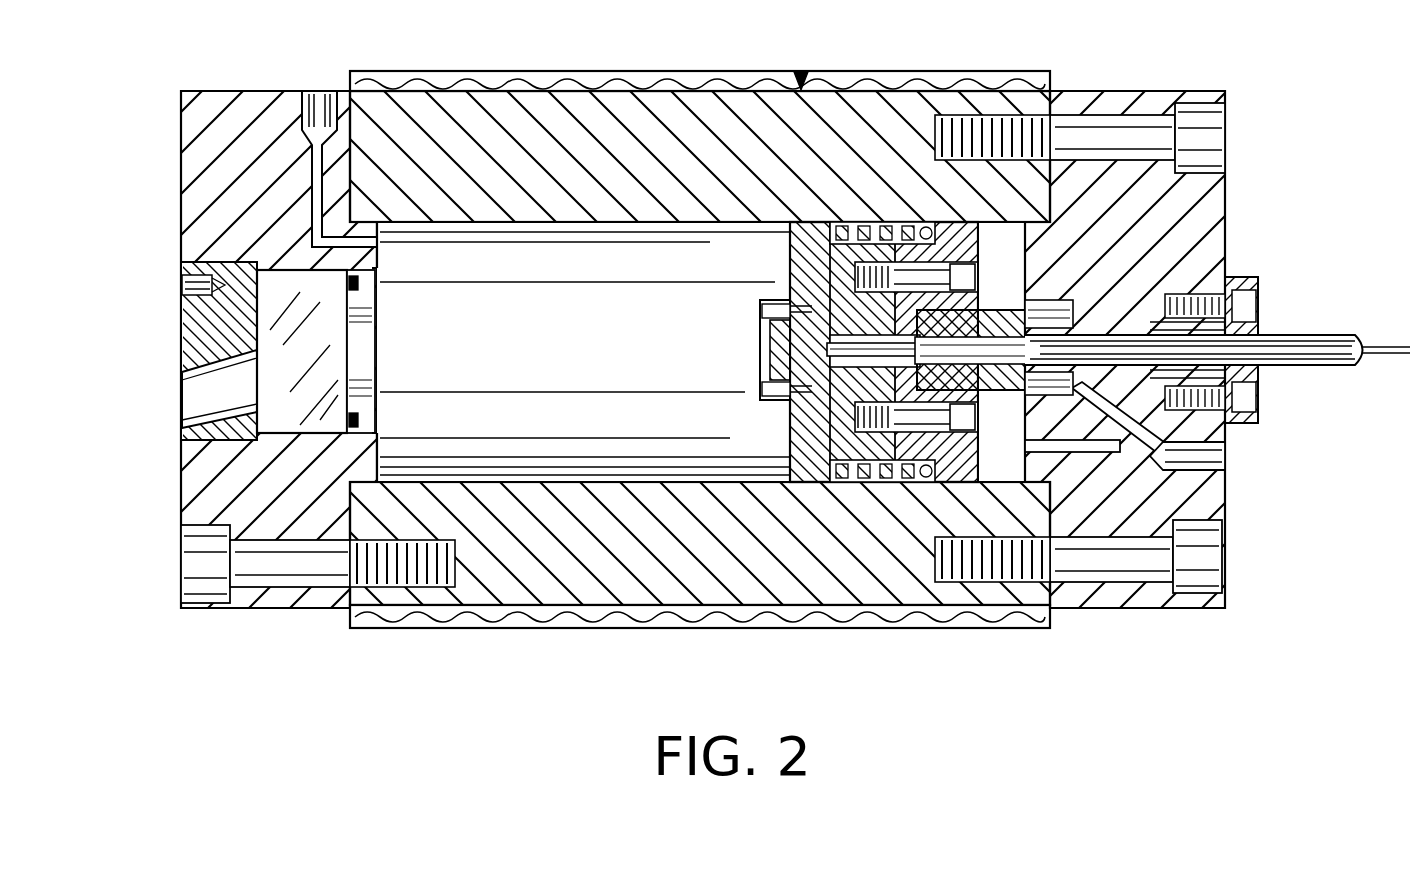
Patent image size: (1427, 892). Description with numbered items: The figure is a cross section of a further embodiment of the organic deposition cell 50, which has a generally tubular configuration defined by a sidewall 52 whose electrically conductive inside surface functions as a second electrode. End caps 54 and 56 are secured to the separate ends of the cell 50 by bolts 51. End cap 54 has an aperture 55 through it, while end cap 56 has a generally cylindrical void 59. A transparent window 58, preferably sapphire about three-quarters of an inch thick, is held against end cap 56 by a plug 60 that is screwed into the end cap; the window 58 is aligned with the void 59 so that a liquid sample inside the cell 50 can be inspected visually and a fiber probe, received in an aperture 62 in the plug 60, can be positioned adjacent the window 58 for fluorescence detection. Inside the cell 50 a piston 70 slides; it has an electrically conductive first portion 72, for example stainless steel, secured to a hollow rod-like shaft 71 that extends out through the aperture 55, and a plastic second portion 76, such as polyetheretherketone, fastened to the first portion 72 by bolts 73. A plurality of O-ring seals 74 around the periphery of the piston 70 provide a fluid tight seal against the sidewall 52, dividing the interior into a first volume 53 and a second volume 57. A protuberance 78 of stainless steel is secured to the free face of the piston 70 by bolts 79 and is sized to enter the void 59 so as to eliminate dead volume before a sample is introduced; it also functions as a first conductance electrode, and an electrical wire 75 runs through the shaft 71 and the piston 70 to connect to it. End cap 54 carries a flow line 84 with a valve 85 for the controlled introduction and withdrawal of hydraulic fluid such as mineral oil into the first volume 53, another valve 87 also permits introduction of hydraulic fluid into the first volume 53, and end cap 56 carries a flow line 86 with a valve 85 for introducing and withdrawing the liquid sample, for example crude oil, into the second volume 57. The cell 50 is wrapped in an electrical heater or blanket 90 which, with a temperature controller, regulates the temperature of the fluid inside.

The cell 50 is at (801, 78).
The bolts 51 is at (1110, 125).
The sidewall 52 is at (575, 100).
The first volume 53 is at (984, 262).
The end cap 54 is at (1207, 212).
The aperture 55 is at (1212, 262).
The end cap 56 is at (202, 166).
The second volume 57 is at (565, 370).
The transparent window 58 is at (328, 341).
The void 59 is at (358, 362).
The plug 60 is at (196, 336).
The aperture 62 is at (249, 389).
The piston 70 is at (880, 222).
The shaft 71 is at (1290, 340).
The first portion 72 is at (994, 370).
The bolts 73 is at (976, 285).
The O-ring seals 74 is at (835, 484).
The electrical wire 75 is at (1360, 345).
The second portion 76 is at (790, 236).
The protuberance 78 is at (768, 352).
The bolts 79 is at (786, 414).
The flow line 84 is at (1085, 455).
The valve 85 is at (1212, 458).
The flow line 86 is at (312, 185).
The valve 87 is at (322, 96).
The electrical heater or blanket 90 is at (450, 80).